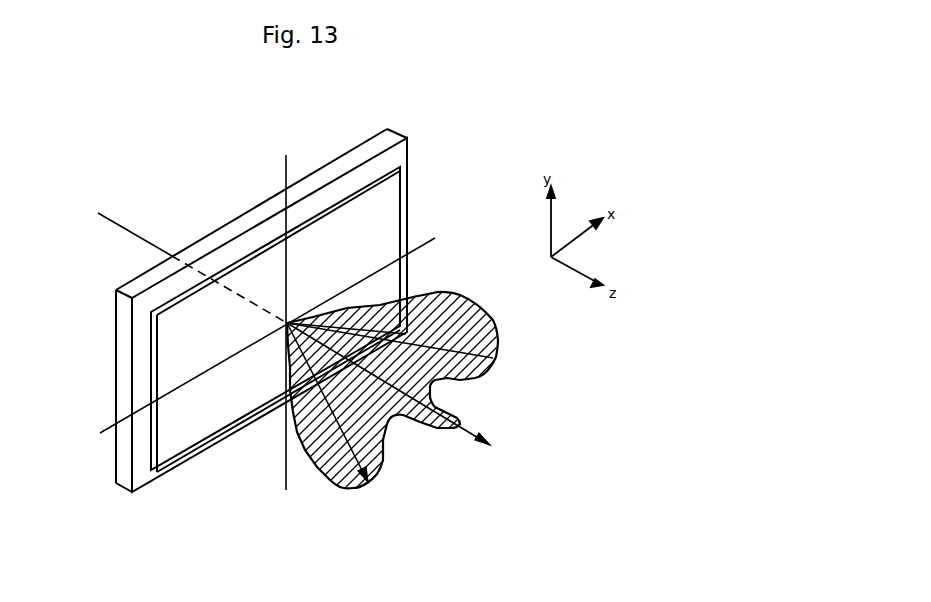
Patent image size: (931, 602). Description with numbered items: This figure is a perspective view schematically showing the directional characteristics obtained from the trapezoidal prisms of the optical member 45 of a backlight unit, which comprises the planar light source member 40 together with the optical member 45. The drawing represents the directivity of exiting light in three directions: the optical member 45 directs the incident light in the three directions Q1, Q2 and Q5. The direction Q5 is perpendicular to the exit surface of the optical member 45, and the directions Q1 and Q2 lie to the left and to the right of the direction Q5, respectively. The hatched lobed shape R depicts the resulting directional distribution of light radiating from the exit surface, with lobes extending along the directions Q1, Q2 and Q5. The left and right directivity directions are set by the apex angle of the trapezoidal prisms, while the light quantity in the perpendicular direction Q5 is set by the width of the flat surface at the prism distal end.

The planar light source member 40 is at (387, 132).
The optical member 45 is at (367, 203).
The luminance distribution R is at (443, 305).
The direction Q1 is at (336, 424).
The direction Q2 is at (413, 352).
The direction Q5 is at (422, 401).